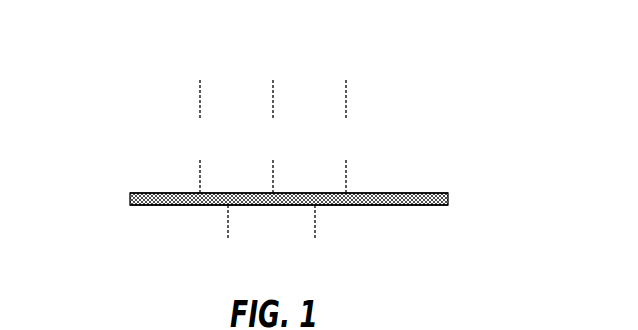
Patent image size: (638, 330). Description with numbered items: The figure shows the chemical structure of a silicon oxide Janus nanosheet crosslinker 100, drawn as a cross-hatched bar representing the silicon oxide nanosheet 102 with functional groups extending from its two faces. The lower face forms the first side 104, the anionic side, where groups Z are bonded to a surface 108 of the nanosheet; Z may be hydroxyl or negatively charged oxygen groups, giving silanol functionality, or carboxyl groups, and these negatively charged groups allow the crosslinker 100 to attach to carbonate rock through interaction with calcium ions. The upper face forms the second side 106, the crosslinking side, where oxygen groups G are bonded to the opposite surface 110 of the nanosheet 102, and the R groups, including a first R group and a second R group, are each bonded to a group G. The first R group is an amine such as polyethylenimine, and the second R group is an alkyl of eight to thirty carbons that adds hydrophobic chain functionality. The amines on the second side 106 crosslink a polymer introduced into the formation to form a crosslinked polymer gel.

The silicon oxide Janus nanosheet crosslinker 100 is at (147, 55).
The silicon oxide nanosheet 102 is at (435, 193).
The first side 104 is at (362, 228).
The second side 106 is at (383, 93).
The surface 108 is at (142, 205).
The opposite surface 110 is at (142, 193).